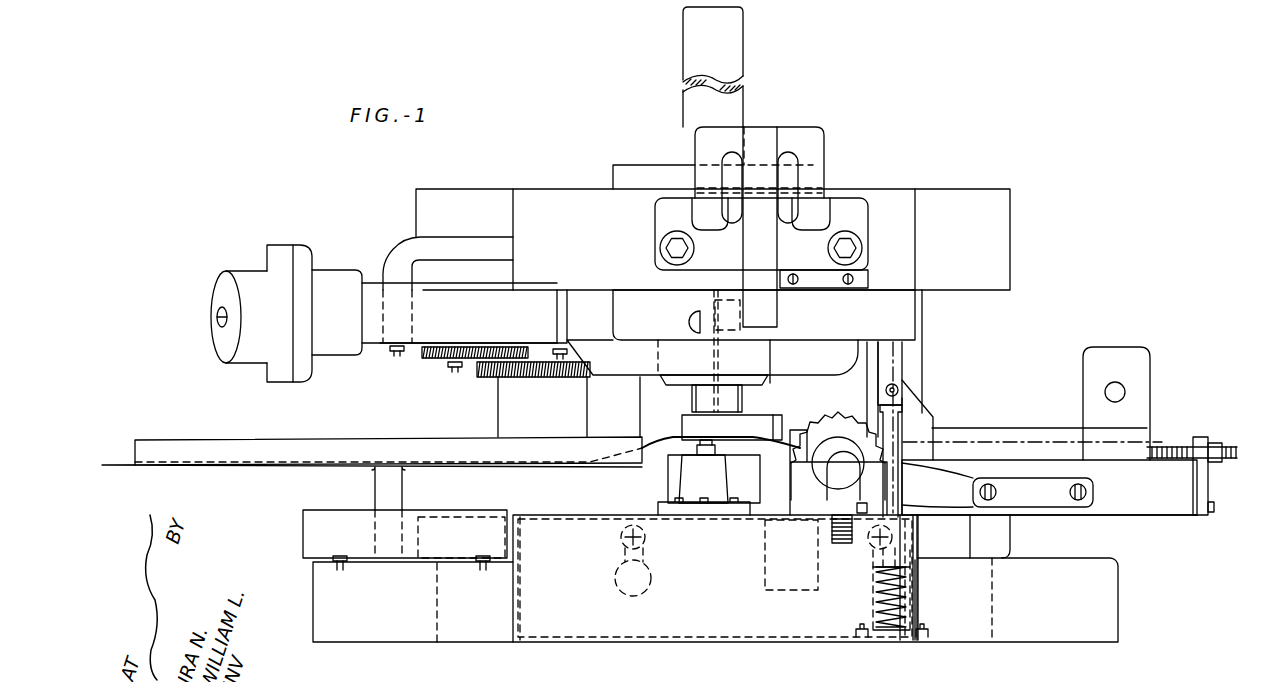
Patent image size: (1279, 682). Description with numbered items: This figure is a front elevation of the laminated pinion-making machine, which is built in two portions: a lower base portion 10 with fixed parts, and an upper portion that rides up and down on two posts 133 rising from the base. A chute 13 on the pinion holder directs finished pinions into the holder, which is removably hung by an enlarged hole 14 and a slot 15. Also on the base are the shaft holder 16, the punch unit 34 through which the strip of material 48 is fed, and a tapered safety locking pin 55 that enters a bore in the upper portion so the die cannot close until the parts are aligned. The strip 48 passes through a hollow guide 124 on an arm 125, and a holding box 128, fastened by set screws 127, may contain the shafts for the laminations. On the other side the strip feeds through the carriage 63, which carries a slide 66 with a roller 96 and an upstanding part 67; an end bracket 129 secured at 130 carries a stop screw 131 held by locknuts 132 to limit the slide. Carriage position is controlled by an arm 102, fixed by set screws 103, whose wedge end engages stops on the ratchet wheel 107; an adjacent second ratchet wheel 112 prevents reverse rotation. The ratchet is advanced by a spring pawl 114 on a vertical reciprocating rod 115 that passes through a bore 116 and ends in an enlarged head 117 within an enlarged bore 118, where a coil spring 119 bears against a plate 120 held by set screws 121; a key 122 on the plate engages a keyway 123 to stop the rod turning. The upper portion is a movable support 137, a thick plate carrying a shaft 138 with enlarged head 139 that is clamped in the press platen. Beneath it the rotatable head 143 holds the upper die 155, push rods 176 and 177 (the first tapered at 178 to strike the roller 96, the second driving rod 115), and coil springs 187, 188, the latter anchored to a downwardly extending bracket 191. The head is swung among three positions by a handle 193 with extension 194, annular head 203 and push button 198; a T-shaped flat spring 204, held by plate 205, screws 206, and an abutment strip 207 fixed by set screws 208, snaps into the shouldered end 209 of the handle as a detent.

The base portion 10 is at (470, 622).
The chute 13 is at (767, 547).
The enlarged hole 14 is at (614, 583).
The slot 15 is at (625, 553).
The shaft holder 16 is at (675, 482).
The punch unit 34 is at (675, 451).
The strip of material 48 is at (122, 462).
The tapered safety locking pin 55 is at (742, 410).
The carriage 63 is at (1170, 507).
The slide 66 is at (1005, 428).
The bracket 67 is at (1083, 362).
The roller 96 is at (925, 400).
The arm 102 is at (948, 491).
The set screws 103 is at (992, 489).
The ratchet wheel 107 is at (851, 410).
The second ratchet wheel 112 is at (810, 500).
The spring pawl 114 is at (905, 470).
The vertical reciprocating rod 115 is at (897, 445).
The bore 116 is at (905, 528).
The enlarged head 117 is at (912, 567).
The enlarged bore 118 is at (873, 605).
The coil spring 119 is at (873, 593).
The plate 120 is at (870, 637).
The set screws 121 is at (925, 637).
The key 122 is at (912, 587).
The keyway 123 is at (913, 553).
The hollow guide 124 is at (380, 438).
The arm 125 is at (375, 487).
The set screws 127 is at (340, 555).
The holding box 128 is at (302, 537).
The end bracket 129 is at (1210, 480).
The securing means 130 is at (1215, 507).
The stop screw 131 is at (1181, 445).
The locknuts 132 is at (1212, 445).
The posts 133 is at (503, 407).
The movable support 137 is at (1010, 246).
The shaft 138 is at (683, 62).
The enlarged head 139 is at (645, 170).
The rotatable head 143 is at (905, 318).
The upper die 155 is at (688, 411).
The push rod 176 is at (866, 357).
The push rod 177 is at (905, 373).
The tapered lower end 178 is at (885, 390).
The coil spring 187 is at (540, 378).
The coil spring 188 is at (428, 360).
The downwardly extending bracket 191 is at (398, 257).
The handle 193 is at (269, 236).
The extension 194 is at (633, 365).
The push button 198 is at (245, 352).
The annular head 203 is at (287, 373).
The T-shaped flat spring 204 is at (772, 246).
The plate 205 is at (846, 212).
The screws 206 is at (661, 242).
The abutment strip 207 is at (868, 276).
The set screws 208 is at (797, 283).
The shouldered end 209 is at (613, 312).